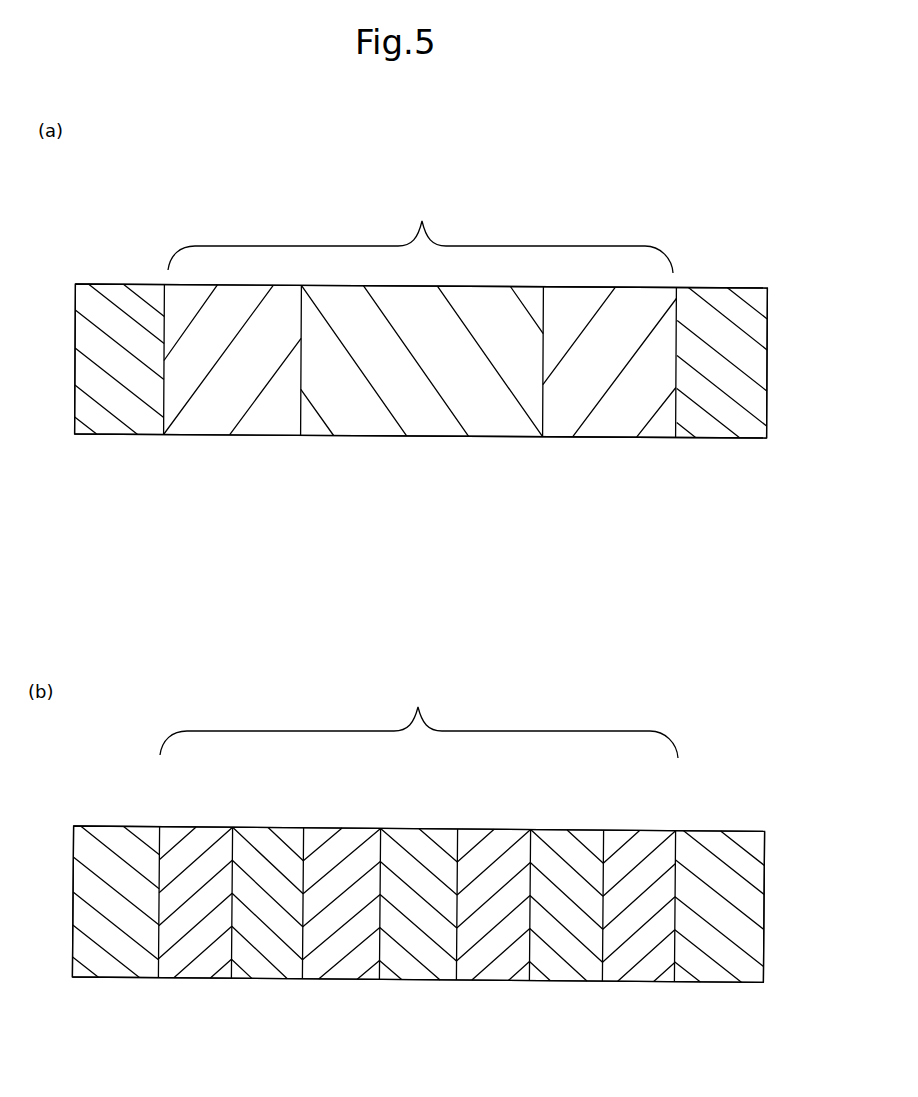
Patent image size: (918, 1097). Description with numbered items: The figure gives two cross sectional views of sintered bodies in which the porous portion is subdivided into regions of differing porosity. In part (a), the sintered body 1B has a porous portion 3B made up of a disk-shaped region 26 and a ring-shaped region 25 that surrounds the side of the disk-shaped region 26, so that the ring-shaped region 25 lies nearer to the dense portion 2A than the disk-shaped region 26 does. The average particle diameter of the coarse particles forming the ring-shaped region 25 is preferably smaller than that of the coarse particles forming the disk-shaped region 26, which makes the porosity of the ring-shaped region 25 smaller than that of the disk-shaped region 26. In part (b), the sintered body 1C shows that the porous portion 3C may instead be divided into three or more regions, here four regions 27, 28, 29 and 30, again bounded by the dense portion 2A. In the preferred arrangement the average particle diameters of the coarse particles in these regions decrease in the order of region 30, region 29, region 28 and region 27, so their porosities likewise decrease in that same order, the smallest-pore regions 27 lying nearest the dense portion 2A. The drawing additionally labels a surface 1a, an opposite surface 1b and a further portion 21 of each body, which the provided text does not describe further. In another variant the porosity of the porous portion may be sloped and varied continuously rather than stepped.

The first surface of substrate 1a is at (198, 284).
The second surface of substrate 1b is at (263, 435).
The sintered body 1B is at (808, 252).
The sintered body 1C is at (805, 797).
The first oriented section 21 is at (123, 425).
The ring-shaped region 25 is at (200, 420).
The disk-shaped region 26 is at (498, 427).
The region 27 is at (205, 840).
The region 28 is at (262, 840).
The region 29 is at (342, 843).
The region 30 is at (412, 843).
The dense portion 2A is at (698, 320).
The porous portion 3B is at (420, 233).
The porous portion 3C is at (419, 719).